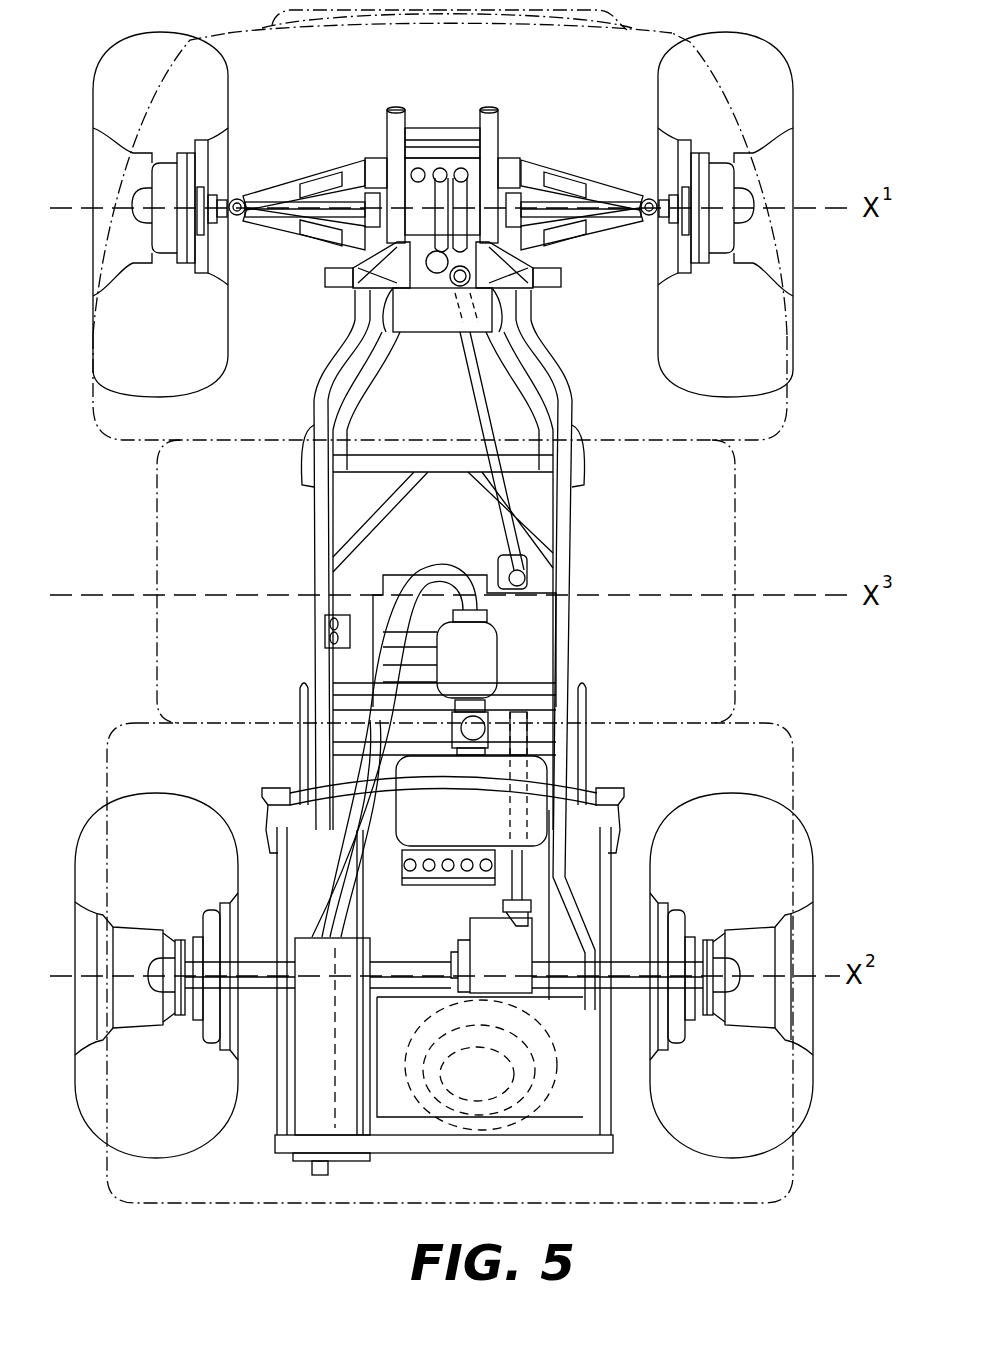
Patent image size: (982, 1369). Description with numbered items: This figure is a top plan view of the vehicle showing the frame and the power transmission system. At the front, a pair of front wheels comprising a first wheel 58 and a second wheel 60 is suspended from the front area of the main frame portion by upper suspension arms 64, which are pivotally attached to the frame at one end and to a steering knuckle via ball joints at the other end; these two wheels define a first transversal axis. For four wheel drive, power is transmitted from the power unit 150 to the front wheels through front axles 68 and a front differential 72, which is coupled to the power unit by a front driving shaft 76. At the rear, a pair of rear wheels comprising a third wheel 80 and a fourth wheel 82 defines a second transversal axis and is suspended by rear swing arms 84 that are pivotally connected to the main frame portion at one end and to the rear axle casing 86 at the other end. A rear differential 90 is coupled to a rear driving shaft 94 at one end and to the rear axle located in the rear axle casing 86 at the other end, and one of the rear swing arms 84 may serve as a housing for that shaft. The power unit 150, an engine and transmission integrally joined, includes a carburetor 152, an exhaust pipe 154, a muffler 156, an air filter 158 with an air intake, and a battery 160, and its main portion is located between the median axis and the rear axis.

The first wheel 58 is at (100, 108).
The second wheel 60 is at (785, 96).
The front differential 72 is at (451, 126).
The upper suspension arms 64 is at (280, 186).
The front axles 68 is at (318, 206).
The front driving shaft 76 is at (490, 459).
The power unit 150 is at (533, 642).
The exhaust pipe 154 is at (385, 712).
The carburetor 152 is at (477, 728).
The air filter 158 is at (413, 800).
The rear driving shaft 94 is at (520, 870).
The rear swing arms 84 is at (347, 913).
The battery 160 is at (452, 883).
The third wheel 80 is at (83, 1002).
The fourth wheel 82 is at (803, 872).
The rear axle casing 86 is at (255, 998).
The muffler 156 is at (308, 1125).
The differential 90 is at (480, 982).